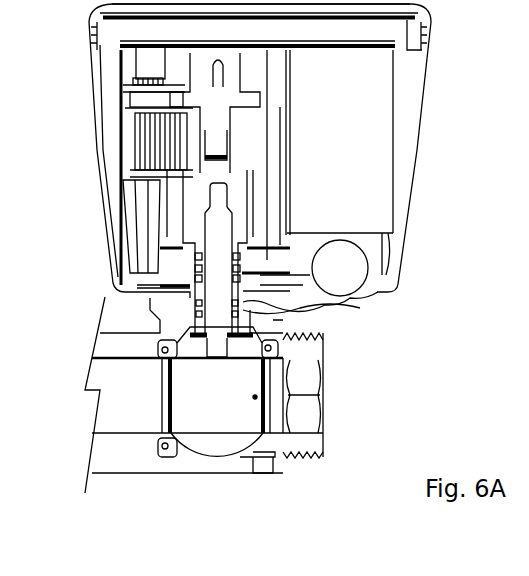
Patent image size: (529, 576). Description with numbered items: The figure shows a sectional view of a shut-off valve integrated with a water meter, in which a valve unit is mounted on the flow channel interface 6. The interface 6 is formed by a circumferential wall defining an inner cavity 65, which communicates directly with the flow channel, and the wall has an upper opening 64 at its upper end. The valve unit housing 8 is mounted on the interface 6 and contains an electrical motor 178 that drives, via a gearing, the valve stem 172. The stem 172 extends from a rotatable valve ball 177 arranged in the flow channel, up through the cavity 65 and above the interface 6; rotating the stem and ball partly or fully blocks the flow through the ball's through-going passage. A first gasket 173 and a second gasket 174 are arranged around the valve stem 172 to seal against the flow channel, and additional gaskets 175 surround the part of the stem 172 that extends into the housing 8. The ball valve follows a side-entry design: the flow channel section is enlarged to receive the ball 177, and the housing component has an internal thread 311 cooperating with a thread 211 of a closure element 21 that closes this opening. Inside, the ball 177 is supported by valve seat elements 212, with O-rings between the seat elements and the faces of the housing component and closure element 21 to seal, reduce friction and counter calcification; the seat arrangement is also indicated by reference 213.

The valve unit housing 8 is at (105, 95).
The electrical motor 178 is at (320, 43).
The additional gaskets 175 is at (245, 263).
The upper opening 64 is at (265, 285).
The flow channel interface 6 is at (398, 269).
The second gasket 174 is at (300, 304).
The first gasket 173 is at (323, 338).
The valve stem 172 is at (213, 267).
The inner cavity 65 is at (150, 298).
The upper seat 213 is at (160, 356).
The closure element 21 is at (310, 447).
The thread 211 is at (267, 455).
The internal thread 311 is at (258, 463).
The valve ball 177 is at (203, 443).
The valve seat elements 212 is at (167, 445).